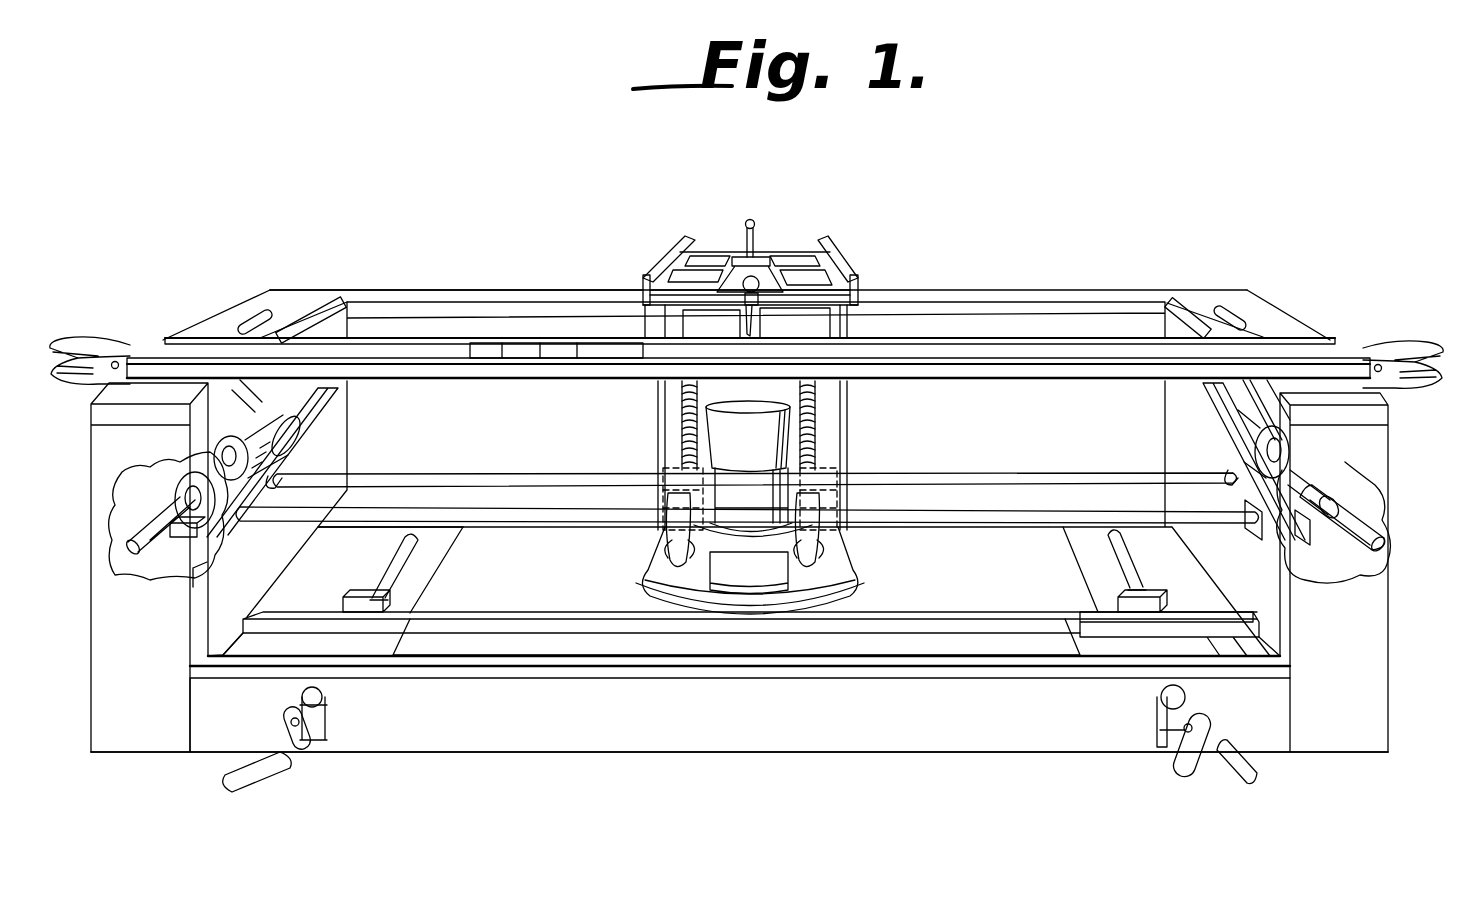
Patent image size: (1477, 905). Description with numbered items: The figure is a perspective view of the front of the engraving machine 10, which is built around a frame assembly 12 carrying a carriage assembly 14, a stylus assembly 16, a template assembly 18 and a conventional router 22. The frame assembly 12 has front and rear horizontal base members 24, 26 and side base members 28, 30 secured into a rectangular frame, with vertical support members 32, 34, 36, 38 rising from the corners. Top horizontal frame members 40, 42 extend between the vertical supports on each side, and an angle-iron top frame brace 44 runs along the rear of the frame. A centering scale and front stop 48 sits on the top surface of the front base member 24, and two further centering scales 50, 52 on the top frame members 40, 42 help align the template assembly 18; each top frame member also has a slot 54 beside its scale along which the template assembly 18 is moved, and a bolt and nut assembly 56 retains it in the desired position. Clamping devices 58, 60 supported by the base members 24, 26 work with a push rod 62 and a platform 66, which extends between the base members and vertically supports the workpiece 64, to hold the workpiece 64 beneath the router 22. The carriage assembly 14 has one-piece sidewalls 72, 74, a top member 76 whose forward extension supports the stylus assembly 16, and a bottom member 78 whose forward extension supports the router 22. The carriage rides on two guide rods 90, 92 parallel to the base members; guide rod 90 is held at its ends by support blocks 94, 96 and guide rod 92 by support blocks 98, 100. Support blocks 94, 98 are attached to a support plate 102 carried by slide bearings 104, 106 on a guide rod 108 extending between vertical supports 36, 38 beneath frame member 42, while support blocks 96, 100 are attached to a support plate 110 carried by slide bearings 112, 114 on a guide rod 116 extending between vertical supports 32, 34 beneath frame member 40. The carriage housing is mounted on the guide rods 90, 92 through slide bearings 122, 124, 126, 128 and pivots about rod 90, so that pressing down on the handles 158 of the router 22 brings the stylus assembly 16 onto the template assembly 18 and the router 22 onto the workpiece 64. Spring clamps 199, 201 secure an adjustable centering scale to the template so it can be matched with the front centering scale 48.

The engraving machine 10 is at (464, 794).
The frame assembly 12 is at (490, 290).
The carriage assembly 14 is at (870, 268).
The stylus assembly 16 is at (742, 311).
The template assembly 18 is at (1010, 383).
The router 22 is at (768, 457).
The front horizontal base member 24 is at (803, 752).
The rear horizontal base member 26 is at (448, 552).
The side base member 28 is at (318, 556).
The side base member 30 is at (1262, 614).
The vertical support member 32 is at (348, 385).
The vertical support member 34 is at (145, 745).
The vertical support member 36 is at (1333, 745).
The vertical support member 38 is at (1205, 413).
The top horizontal frame member 40 is at (232, 312).
The top horizontal frame member 42 is at (1255, 310).
The top frame brace 44 is at (1010, 303).
The centering scale and front stop 48 is at (866, 666).
The centering scale 50 is at (300, 320).
The centering scale 52 is at (1185, 312).
The slot 54 is at (248, 318).
The bolt and nut assembly 56 is at (190, 345).
The clamping device 58 is at (290, 705).
The clamping device 60 is at (1158, 703).
The push rod 62 is at (590, 616).
The workpiece 64 is at (988, 651).
The platform 66 is at (548, 592).
The sidewall 72 is at (848, 325).
The sidewall 74 is at (655, 324).
The top member 76 is at (697, 258).
The bottom member 78 is at (855, 580).
The guide rod 90 is at (952, 472).
The guide rod 92 is at (985, 527).
The support block 94 is at (1222, 472).
The support block 96 is at (282, 462).
The support block 98 is at (1248, 530).
The support block 100 is at (215, 540).
The support plate 102 is at (1310, 585).
The slide bearing 104 is at (1292, 452).
The slide bearing 106 is at (1320, 480).
The guide rod 108 is at (1368, 563).
The support plate 110 is at (290, 440).
The slide bearing 112 is at (185, 475).
The slide bearing 114 is at (228, 432).
The guide rod 116 is at (112, 560).
The slide bearing 122 is at (830, 462).
The slide bearing 124 is at (665, 460).
The slide bearing 126 is at (840, 500).
The slide bearing 128 is at (660, 500).
The handles 158 is at (668, 535).
The spring clamp 199 is at (1385, 345).
The spring clamp 201 is at (95, 335).